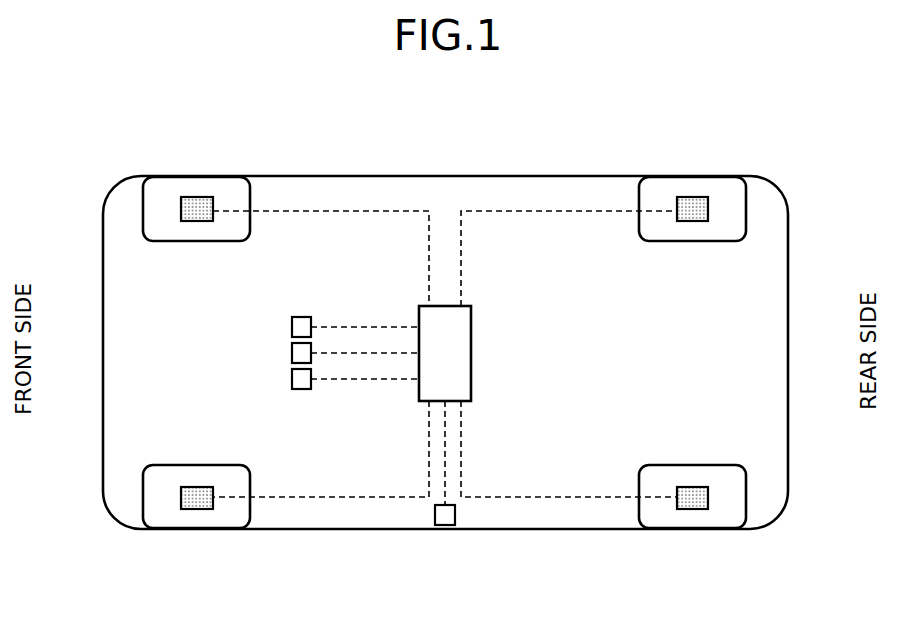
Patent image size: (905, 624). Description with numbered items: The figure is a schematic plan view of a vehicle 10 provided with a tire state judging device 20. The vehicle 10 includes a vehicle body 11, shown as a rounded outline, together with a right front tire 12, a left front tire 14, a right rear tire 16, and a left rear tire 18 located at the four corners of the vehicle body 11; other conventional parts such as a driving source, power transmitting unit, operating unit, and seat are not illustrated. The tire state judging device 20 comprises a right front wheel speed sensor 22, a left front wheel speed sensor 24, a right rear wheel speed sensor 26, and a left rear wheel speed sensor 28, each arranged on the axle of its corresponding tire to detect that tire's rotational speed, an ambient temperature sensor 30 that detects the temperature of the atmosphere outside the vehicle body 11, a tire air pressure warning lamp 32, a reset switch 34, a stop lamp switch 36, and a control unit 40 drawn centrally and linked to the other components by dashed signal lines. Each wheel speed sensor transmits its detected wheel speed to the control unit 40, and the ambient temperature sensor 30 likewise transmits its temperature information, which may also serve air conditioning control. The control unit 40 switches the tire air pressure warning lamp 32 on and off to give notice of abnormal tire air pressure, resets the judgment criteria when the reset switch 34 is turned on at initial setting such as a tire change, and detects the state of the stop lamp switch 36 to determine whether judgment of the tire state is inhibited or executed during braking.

The vehicle 10 is at (358, 166).
The vehicle body 11 is at (788, 427).
The right front tire 12 is at (224, 190).
The left front tire 14 is at (223, 518).
The right rear tire 16 is at (723, 190).
The left rear tire 18 is at (722, 518).
The tire state judging device 20 is at (355, 506).
The right front wheel speed sensor 22 is at (197, 197).
The left front wheel speed sensor 24 is at (197, 509).
The right rear wheel speed sensor 26 is at (693, 197).
The left rear wheel speed sensor 28 is at (692, 509).
The ambient temperature sensor 30 is at (435, 514).
The tire air pressure warning lamp 32 is at (291, 326).
The reset switch 34 is at (291, 352).
The stop lamp switch 36 is at (291, 378).
The control unit 40 is at (471, 353).